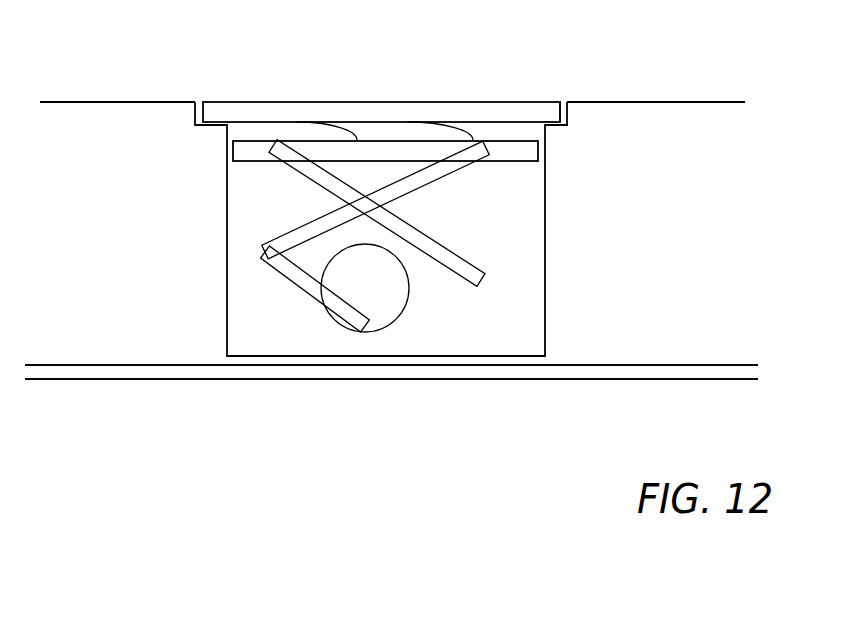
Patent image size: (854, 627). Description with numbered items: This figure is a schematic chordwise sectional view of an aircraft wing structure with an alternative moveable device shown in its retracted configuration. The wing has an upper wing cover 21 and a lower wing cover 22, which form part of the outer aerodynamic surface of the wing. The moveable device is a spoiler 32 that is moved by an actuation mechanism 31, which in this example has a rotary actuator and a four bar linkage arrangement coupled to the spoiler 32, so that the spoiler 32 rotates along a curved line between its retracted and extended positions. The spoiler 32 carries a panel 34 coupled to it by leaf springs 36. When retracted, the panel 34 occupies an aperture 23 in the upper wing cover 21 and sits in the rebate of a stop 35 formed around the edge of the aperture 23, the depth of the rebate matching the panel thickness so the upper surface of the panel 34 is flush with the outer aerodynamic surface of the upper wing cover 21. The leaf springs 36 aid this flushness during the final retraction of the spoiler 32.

The upper wing cover 21 is at (130, 100).
The lower wing cover 22 is at (197, 368).
The aperture 23 is at (192, 90).
The actuation mechanism 31 is at (433, 293).
The spoiler 32 is at (257, 152).
The panel 34 is at (252, 107).
The stop 35 is at (568, 137).
The leaf springs 36 is at (350, 122).